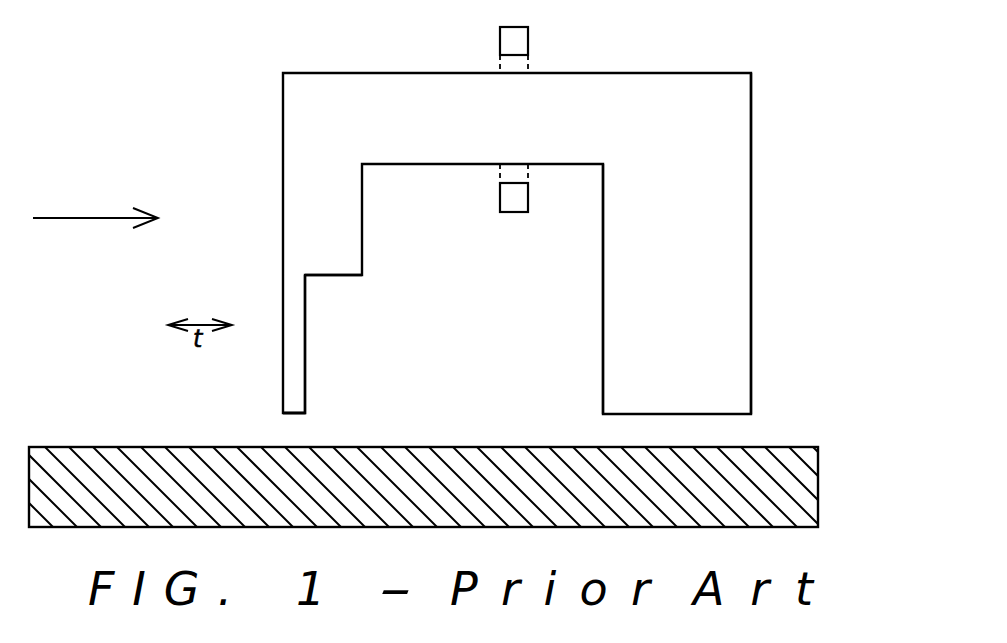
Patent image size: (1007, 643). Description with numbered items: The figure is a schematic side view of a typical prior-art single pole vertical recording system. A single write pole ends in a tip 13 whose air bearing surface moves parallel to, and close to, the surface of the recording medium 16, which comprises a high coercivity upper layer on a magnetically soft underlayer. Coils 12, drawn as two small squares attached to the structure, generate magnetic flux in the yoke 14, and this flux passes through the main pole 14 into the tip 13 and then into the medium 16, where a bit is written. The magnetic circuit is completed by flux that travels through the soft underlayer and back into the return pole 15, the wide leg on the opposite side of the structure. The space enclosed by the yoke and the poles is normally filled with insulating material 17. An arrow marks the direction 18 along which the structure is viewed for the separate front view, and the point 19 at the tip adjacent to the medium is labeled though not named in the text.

The actuator element 12 is at (530, 42).
The tip leg 13 is at (293, 392).
The step 14 is at (317, 253).
The support leg 15 is at (723, 248).
The substrate 16 is at (805, 482).
The beam 17 is at (328, 183).
The direction of motion 18 is at (95, 208).
The contact point 19 is at (301, 426).